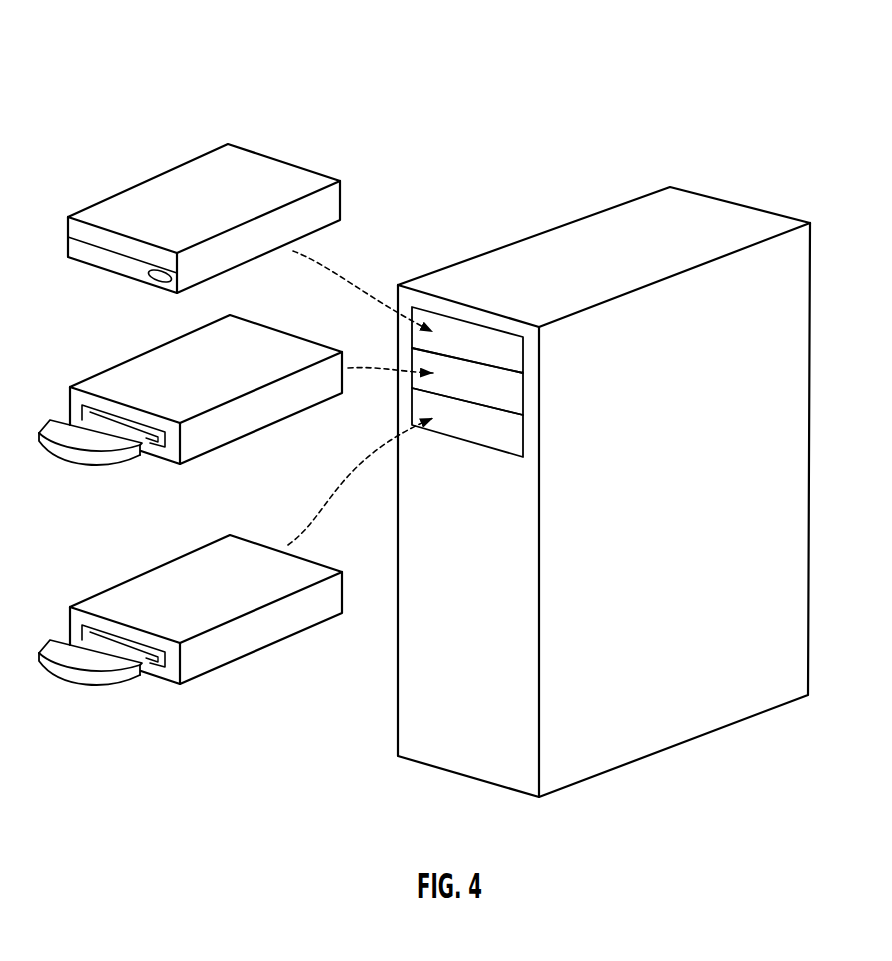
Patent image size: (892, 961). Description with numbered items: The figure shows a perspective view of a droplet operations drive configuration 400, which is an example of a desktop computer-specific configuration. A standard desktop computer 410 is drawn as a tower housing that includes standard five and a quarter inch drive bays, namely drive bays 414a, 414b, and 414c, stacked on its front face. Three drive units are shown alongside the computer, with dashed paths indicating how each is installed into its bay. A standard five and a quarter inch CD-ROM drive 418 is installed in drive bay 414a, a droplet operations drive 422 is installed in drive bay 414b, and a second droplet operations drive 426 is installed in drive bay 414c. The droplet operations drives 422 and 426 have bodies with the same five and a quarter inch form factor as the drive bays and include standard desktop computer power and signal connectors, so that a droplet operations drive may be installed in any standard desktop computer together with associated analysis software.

The droplet operations drive configuration 400 is at (297, 53).
The desktop computer 410 is at (573, 203).
The drive bay 414a is at (523, 352).
The drive bay 414b is at (523, 393).
The drive bay 414c is at (523, 438).
The CD-ROM drive 418 is at (140, 175).
The droplet operations drive 422 is at (138, 347).
The droplet operations drive 426 is at (190, 604).